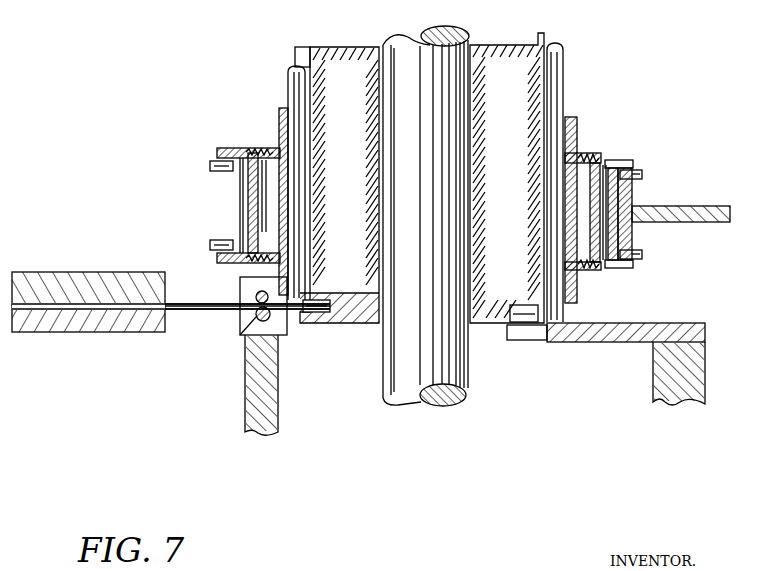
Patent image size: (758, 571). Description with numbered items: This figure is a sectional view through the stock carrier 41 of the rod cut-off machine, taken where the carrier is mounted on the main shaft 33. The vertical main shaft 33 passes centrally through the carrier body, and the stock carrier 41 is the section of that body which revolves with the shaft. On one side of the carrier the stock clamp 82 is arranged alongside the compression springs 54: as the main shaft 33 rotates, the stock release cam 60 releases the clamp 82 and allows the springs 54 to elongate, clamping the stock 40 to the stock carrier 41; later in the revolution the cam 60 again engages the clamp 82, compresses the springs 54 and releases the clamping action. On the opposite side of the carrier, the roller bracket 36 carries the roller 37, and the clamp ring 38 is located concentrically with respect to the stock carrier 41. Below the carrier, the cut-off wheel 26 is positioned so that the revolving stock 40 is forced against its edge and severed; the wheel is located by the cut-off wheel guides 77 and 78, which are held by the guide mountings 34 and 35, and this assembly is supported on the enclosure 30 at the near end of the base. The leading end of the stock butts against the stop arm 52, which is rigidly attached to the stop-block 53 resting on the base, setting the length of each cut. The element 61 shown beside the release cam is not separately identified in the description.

The cut-off wheel 26 is at (196, 304).
The enclosure 30 is at (267, 430).
The main shaft 33 is at (462, 30).
The cut-off wheel guide upper mounting 34 is at (250, 323).
The cut-off wheel guide upper mounting 35 is at (247, 290).
The roller bracket 36 is at (224, 149).
The roller 37 is at (222, 240).
The clamp ring 38 is at (252, 148).
The stock 40 is at (563, 46).
The stock carrier 41 is at (488, 310).
The stop arm 52 is at (642, 330).
The stop-block 53 is at (670, 398).
The compression springs 54 is at (578, 158).
The stock release cam 60 is at (622, 193).
The rod 61 is at (683, 214).
The cut-off wheel guide 77 is at (255, 298).
The cut-off wheel guide 78 is at (279, 323).
The stock clamp 82 is at (569, 118).